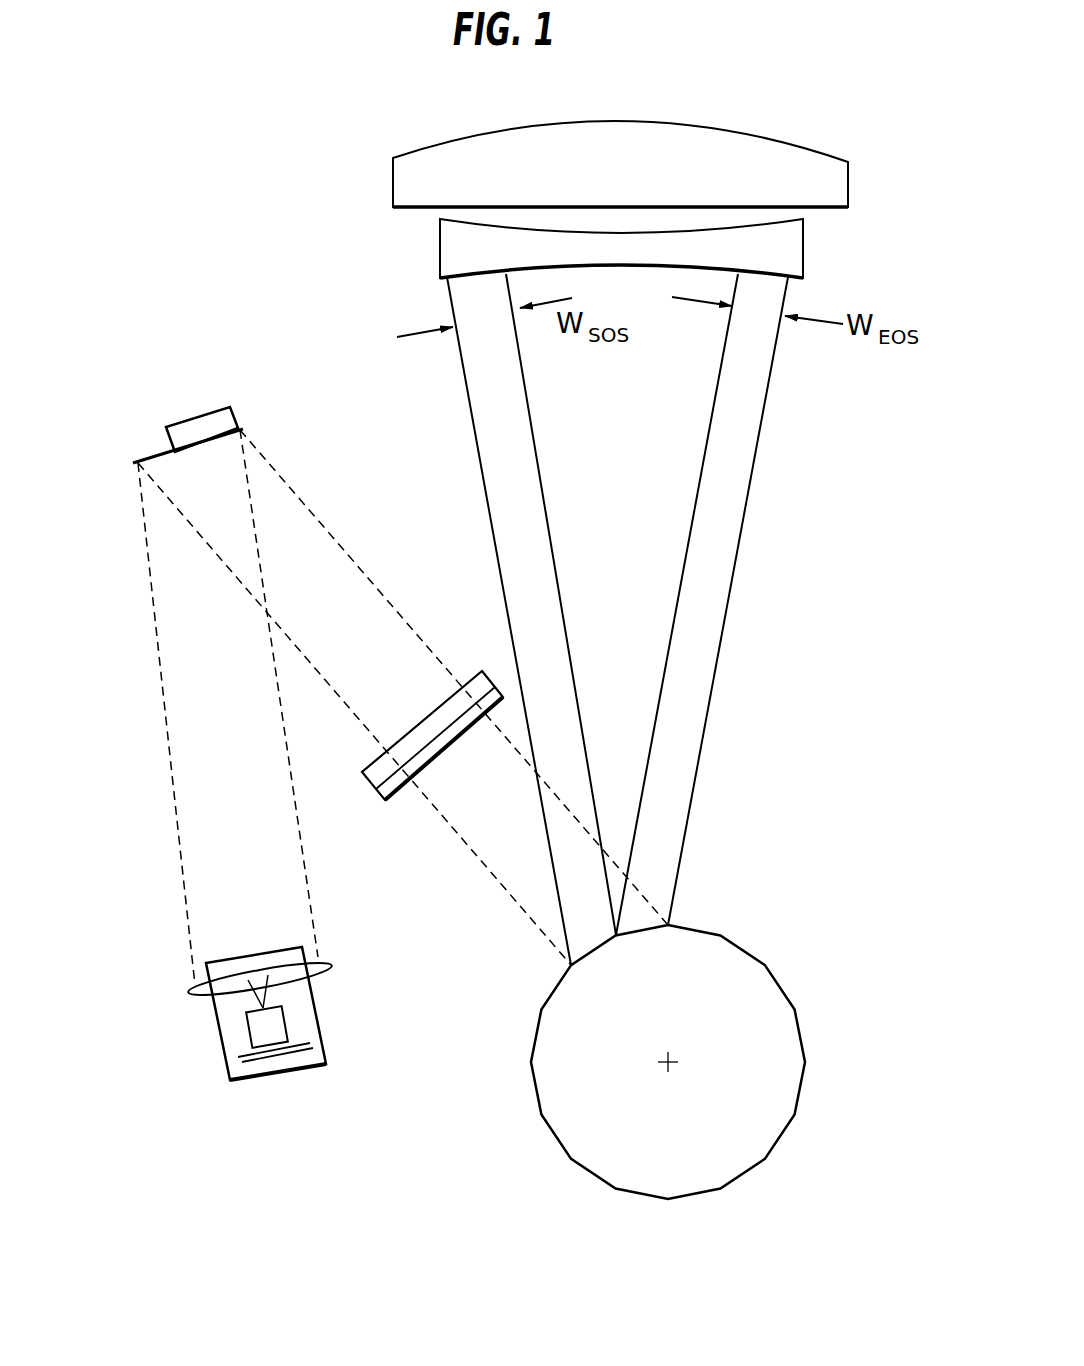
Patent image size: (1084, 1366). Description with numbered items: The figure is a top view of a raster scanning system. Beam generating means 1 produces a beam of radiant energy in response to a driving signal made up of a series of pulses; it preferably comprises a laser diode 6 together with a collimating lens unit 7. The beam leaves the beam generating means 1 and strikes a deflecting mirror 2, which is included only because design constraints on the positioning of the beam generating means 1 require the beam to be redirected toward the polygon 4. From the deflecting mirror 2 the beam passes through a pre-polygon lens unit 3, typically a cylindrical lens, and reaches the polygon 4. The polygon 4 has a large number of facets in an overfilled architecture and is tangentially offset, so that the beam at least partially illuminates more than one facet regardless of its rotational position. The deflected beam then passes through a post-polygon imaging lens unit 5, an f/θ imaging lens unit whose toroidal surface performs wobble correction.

The beam generating means 1 is at (133, 1002).
The deflecting mirror 2 is at (233, 421).
The pre-polygon lens unit 3 is at (372, 793).
The polygon 4 is at (722, 934).
The post-polygon imaging lens unit 5 is at (858, 133).
The laser diode 6 is at (265, 1030).
The collimating lens unit 7 is at (202, 993).